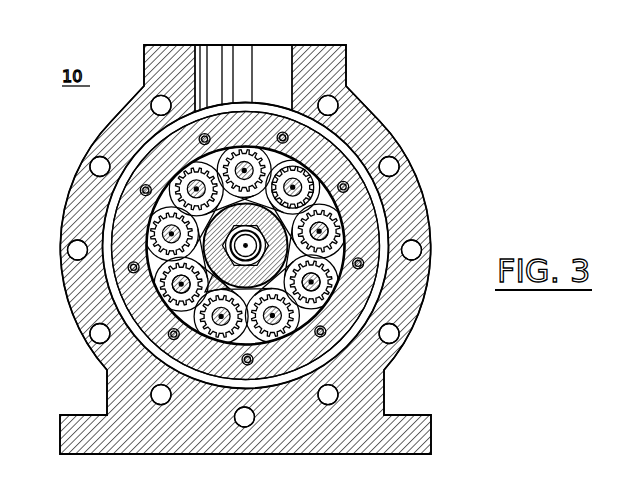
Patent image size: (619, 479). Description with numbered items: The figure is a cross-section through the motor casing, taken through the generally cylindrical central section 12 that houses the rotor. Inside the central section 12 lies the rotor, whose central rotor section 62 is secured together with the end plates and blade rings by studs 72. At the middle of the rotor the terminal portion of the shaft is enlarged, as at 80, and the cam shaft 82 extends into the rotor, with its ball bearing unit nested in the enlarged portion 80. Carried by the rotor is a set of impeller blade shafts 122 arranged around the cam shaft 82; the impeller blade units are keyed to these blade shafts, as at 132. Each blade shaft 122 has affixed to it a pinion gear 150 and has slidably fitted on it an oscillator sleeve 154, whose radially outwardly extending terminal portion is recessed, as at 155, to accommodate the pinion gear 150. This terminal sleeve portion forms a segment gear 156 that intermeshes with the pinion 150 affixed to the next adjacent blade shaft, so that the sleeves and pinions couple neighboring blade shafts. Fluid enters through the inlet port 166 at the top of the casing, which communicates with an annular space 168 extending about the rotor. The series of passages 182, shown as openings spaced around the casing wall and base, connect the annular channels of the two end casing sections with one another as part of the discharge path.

The central section 12 is at (128, 100).
The central rotor section 62 is at (405, 230).
The studs 72 is at (362, 265).
The enlarged terminal portion of the shaft 80 is at (208, 290).
The cam shaft 82 is at (192, 318).
The impeller blade shafts 122 is at (323, 227).
The key 132 is at (365, 215).
The pinion gear 150 is at (379, 242).
The oscillator sleeve 154 is at (293, 168).
The recess 155 is at (318, 205).
The segment gear 156 is at (340, 200).
The inlet port 166 is at (230, 55).
The annular space 168 is at (122, 184).
The passages 182 is at (414, 250).